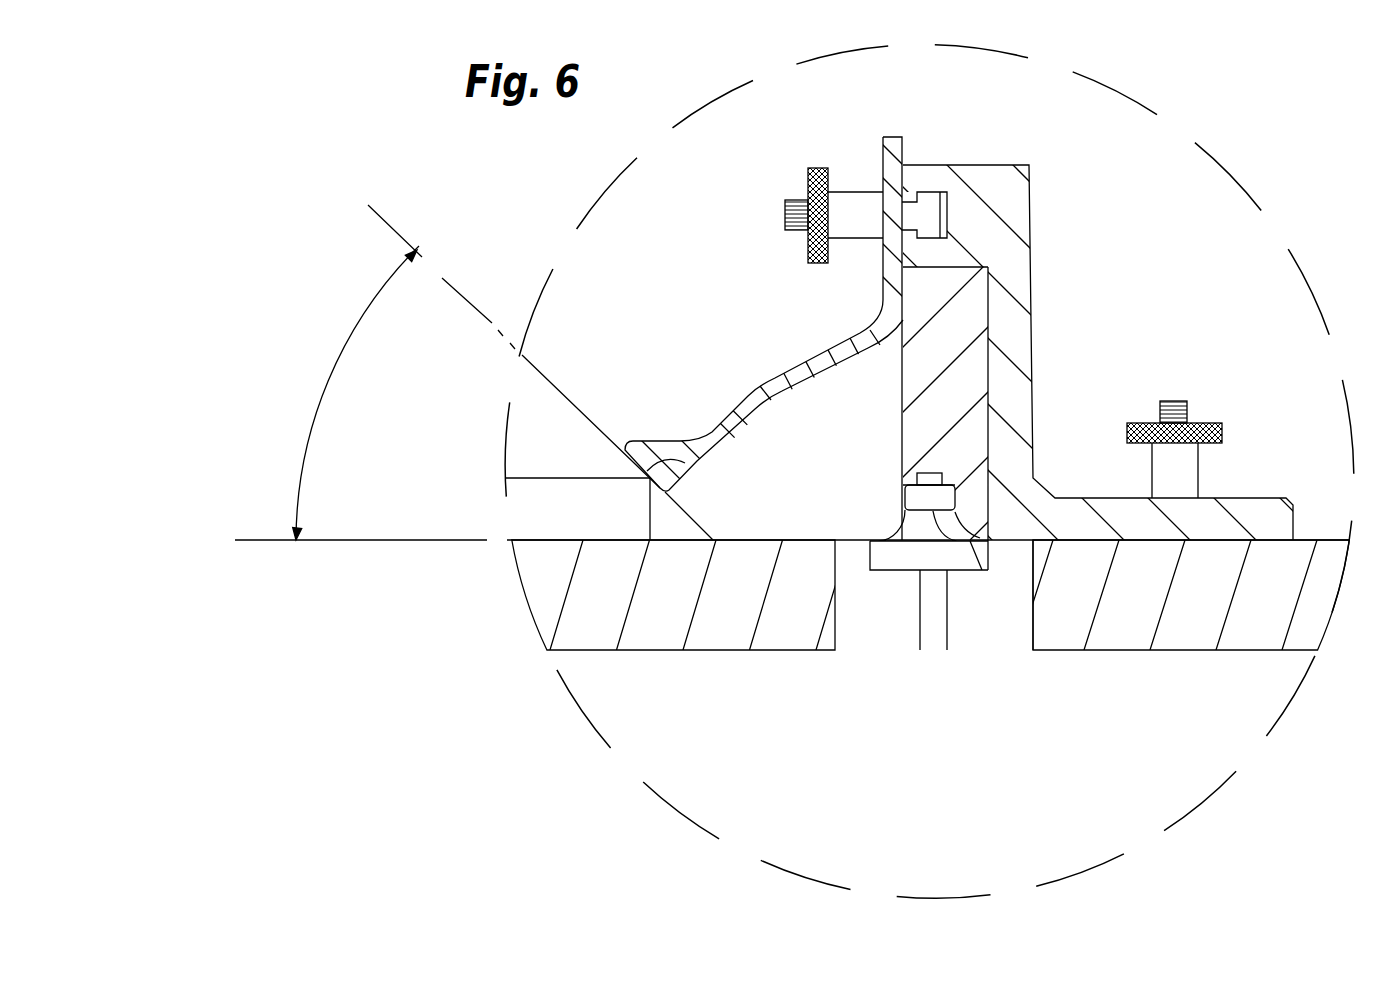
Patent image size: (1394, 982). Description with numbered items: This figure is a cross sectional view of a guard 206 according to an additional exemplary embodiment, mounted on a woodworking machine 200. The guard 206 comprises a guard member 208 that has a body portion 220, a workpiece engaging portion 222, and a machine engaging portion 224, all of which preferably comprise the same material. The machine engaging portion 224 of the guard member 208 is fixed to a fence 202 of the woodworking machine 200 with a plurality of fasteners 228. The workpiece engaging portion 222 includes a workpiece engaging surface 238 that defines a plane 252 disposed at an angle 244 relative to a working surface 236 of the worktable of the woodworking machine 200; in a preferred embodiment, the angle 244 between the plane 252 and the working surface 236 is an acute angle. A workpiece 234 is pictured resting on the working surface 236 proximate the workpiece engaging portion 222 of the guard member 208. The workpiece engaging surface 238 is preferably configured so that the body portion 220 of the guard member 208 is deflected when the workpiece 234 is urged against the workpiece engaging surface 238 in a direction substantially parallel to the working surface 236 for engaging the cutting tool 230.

The woodworking machine 200 is at (643, 688).
The fence 202 is at (1031, 232).
The guard 206 is at (632, 258).
The guard member 208 is at (819, 350).
The body portion 220 is at (760, 383).
The workpiece engaging portion 222 is at (670, 523).
The machine engaging portion 224 is at (870, 152).
The fasteners 228 is at (787, 203).
The cutting tool 230 is at (968, 570).
The workpiece 234 is at (555, 478).
The working surface 236 is at (742, 540).
The workpiece engaging surface 238 is at (697, 463).
The angle 244 is at (313, 423).
The plane 252 is at (590, 373).